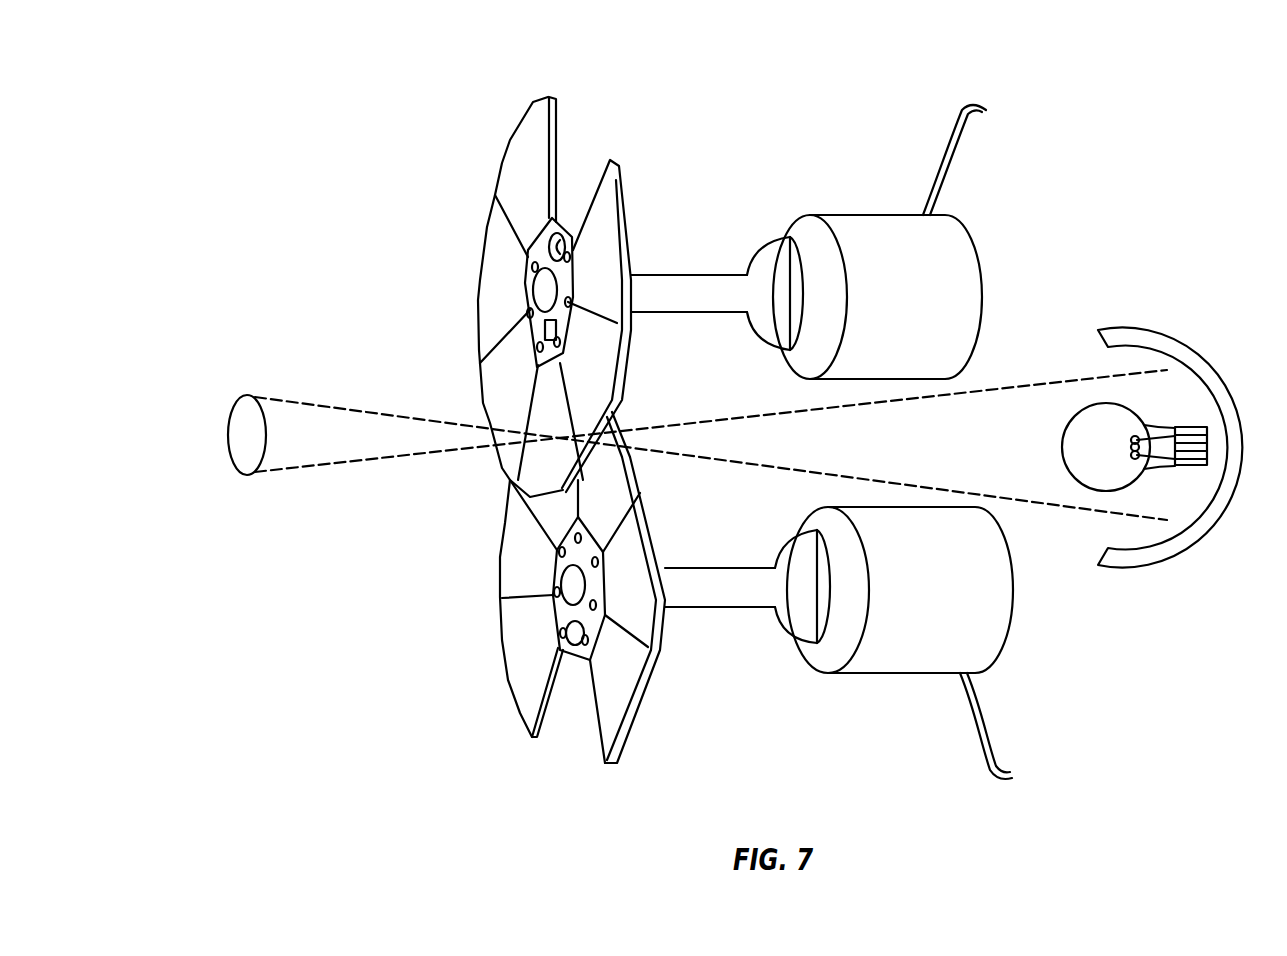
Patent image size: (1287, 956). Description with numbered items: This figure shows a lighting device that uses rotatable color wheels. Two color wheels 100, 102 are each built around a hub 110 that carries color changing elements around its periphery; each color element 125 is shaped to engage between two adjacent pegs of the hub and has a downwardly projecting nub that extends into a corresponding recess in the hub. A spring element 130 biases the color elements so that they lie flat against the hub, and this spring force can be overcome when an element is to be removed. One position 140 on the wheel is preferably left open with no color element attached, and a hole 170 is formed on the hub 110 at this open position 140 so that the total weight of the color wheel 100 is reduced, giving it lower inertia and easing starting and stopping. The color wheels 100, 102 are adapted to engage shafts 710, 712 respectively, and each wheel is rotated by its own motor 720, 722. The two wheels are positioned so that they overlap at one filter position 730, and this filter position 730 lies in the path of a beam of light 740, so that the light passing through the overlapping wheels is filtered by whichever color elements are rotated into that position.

The color wheel 100 is at (549, 263).
The color wheel 102 is at (518, 672).
The hub 110 is at (552, 220).
The color element 125 is at (523, 137).
The spring element 130 is at (619, 165).
The open position 140 is at (586, 86).
The hole 170 is at (560, 243).
The shaft 710 is at (710, 309).
The shaft 712 is at (738, 603).
The motor 720 is at (930, 308).
The motor 722 is at (948, 603).
The filter position 730 is at (540, 408).
The beam of light 740 is at (992, 457).